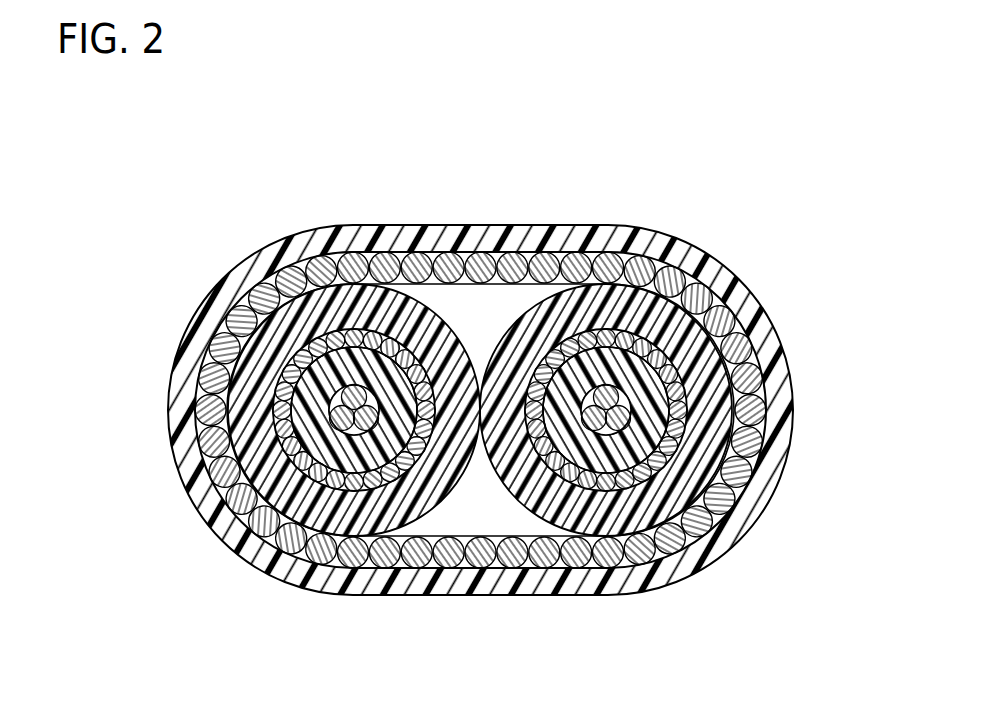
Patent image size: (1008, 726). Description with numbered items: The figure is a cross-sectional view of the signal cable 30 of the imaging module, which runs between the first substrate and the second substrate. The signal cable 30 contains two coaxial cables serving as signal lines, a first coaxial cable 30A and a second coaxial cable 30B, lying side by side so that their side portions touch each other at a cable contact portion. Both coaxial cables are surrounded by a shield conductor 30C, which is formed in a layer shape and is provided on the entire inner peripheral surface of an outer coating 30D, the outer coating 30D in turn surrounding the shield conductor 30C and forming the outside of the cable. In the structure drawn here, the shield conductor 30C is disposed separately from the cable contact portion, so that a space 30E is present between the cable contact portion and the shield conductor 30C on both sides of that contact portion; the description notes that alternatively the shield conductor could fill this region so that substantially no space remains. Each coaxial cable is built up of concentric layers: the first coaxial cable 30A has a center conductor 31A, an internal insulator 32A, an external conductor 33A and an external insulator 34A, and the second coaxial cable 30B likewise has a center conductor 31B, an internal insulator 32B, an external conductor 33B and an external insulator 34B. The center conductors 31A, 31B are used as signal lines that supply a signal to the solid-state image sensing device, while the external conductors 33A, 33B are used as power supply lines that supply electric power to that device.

The signal cable 30 is at (766, 115).
The first coaxial cable 30A is at (274, 347).
The second coaxial cable 30B is at (669, 407).
The shield conductor 30C is at (573, 550).
The outer coating 30D is at (733, 527).
The space 30E is at (450, 520).
The center conductor 31A is at (357, 388).
The center conductor 31B is at (607, 393).
The internal insulator 32A is at (323, 383).
The internal insulator 32B is at (628, 370).
The external conductor 33A is at (293, 367).
The external conductor 33B is at (667, 367).
The external insulator 34A is at (253, 408).
The external insulator 34B is at (708, 393).